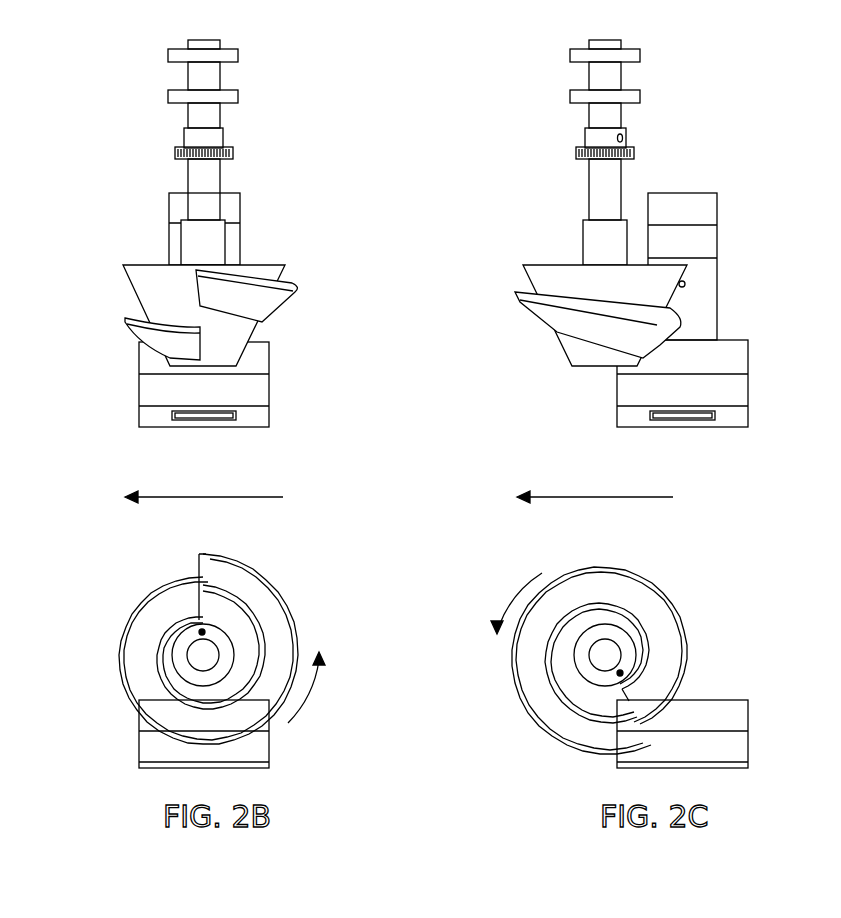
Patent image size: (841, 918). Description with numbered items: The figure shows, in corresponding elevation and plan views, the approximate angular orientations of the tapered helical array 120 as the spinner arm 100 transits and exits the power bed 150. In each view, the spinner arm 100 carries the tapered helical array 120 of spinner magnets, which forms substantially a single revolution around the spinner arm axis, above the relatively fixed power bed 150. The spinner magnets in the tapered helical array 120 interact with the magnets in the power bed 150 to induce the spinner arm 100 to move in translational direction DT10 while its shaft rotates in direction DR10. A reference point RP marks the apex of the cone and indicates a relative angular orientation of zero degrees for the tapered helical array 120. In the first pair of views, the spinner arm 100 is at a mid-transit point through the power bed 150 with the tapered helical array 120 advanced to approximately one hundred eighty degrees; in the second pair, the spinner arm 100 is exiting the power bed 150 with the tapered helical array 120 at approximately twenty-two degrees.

In FIG. 2B, the spinner arm 100 is at (306, 303).
In FIG. 2C, the spinner arm 100 is at (568, 246).
In FIG. 2B, the tapered helical array 120 is at (160, 338).
In FIG. 2C, the tapered helical array 120 is at (552, 314).
In FIG. 2B, the power bed 150 is at (160, 209).
In FIG. 2C, the power bed 150 is at (736, 234).
In FIG. 2B, the reference point RP is at (202, 632).
In FIG. 2C, the reference point RP is at (620, 673).
In FIG. 2B, the translational direction DT10 is at (204, 487).
In FIG. 2C, the translational direction DT10 is at (595, 487).
In FIG. 2B, the rotation direction DR10 is at (331, 687).
In FIG. 2C, the rotation direction DR10 is at (526, 592).